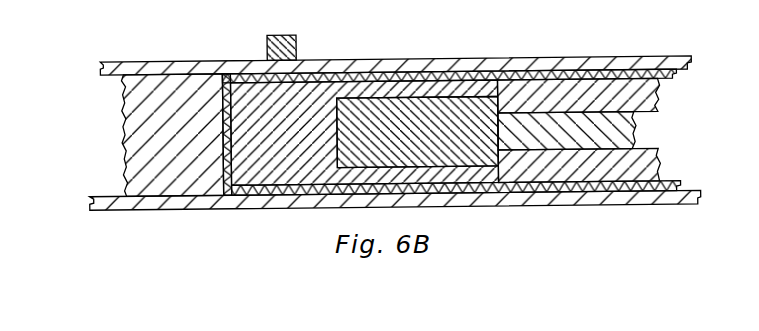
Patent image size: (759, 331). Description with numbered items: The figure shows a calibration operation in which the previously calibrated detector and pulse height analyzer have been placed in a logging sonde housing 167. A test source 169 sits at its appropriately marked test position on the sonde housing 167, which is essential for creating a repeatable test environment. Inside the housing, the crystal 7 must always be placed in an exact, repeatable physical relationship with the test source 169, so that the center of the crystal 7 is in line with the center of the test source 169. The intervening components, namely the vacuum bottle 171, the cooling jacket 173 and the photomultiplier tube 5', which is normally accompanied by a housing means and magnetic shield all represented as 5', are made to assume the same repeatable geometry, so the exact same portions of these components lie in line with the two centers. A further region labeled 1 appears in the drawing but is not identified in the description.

The logging sonde housing 167 is at (433, 58).
The test source 169 is at (297, 34).
The vacuum bottle 171 is at (677, 76).
The cooling jacket 173 is at (658, 100).
The crystal 7 is at (364, 132).
The photomultiplier tube 5' is at (418, 131).
The element 1 is at (567, 131).